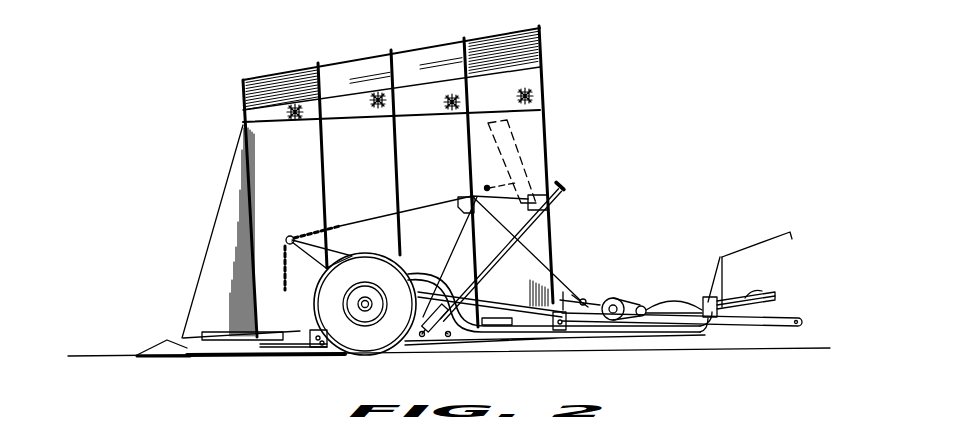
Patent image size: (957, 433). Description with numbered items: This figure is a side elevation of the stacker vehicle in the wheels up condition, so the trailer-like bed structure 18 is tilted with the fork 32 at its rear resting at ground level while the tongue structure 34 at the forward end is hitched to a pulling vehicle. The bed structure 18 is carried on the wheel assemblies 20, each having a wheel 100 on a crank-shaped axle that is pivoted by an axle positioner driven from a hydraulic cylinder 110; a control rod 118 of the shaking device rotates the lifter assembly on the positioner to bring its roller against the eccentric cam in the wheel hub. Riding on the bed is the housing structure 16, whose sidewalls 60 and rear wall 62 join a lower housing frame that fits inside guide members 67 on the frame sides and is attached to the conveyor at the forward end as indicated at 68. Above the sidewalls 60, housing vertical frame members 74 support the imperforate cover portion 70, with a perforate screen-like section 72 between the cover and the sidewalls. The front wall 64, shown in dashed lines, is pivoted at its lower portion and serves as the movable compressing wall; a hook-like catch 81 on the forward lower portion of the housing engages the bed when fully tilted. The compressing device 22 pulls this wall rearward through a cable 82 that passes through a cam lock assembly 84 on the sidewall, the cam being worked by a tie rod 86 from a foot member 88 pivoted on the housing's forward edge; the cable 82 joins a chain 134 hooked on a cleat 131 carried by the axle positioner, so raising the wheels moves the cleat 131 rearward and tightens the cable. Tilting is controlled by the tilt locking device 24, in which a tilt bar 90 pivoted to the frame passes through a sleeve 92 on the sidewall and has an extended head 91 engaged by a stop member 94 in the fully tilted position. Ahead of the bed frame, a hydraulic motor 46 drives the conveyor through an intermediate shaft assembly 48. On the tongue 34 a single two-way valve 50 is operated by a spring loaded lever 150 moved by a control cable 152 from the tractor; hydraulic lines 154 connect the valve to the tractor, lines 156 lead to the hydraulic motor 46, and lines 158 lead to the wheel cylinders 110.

The housing structure 16 is at (236, 76).
The stacker vehicle bed structure 18 is at (128, 338).
The wheel assemblies 20 is at (322, 366).
The compressing device 22 is at (278, 228).
The tilt locking device 24 is at (572, 192).
The fork 32 is at (160, 343).
The tongue structure 34 is at (742, 326).
The hydraulic motor 46 is at (641, 305).
The intermediate shaft assembly 48 is at (613, 298).
The two-way valve 50 is at (771, 310).
The sidewalls 60 is at (523, 113).
The rear wall 62 is at (227, 203).
The front wall 64 is at (500, 137).
The guide members 67 is at (240, 341).
The housing attachment to conveyor 68 is at (556, 330).
The imperforate cover portion 70 is at (428, 57).
The perforate screen-like section 72 is at (502, 78).
The housing vertical frame members 74 is at (323, 147).
The hook-like catch 81 is at (580, 298).
The cable 82 is at (437, 202).
The cam lock assembly 84 is at (447, 210).
The tie rod 86 is at (563, 298).
The foot member 88 is at (582, 300).
The tilt bar 90 is at (465, 280).
The extended head 91 is at (562, 184).
The sleeve 92 is at (553, 202).
The stop member 94 is at (535, 200).
The wheel 100 is at (333, 306).
The hydraulic cylinder 110 is at (412, 343).
The control rod 118 is at (497, 318).
The cleat 131 is at (290, 237).
The chain 134 is at (343, 225).
The spring loaded lever 150 is at (723, 272).
The control cable 152 is at (753, 247).
The hydraulic lines 154 is at (762, 290).
The lines 156 is at (662, 300).
The lines 158 is at (640, 333).